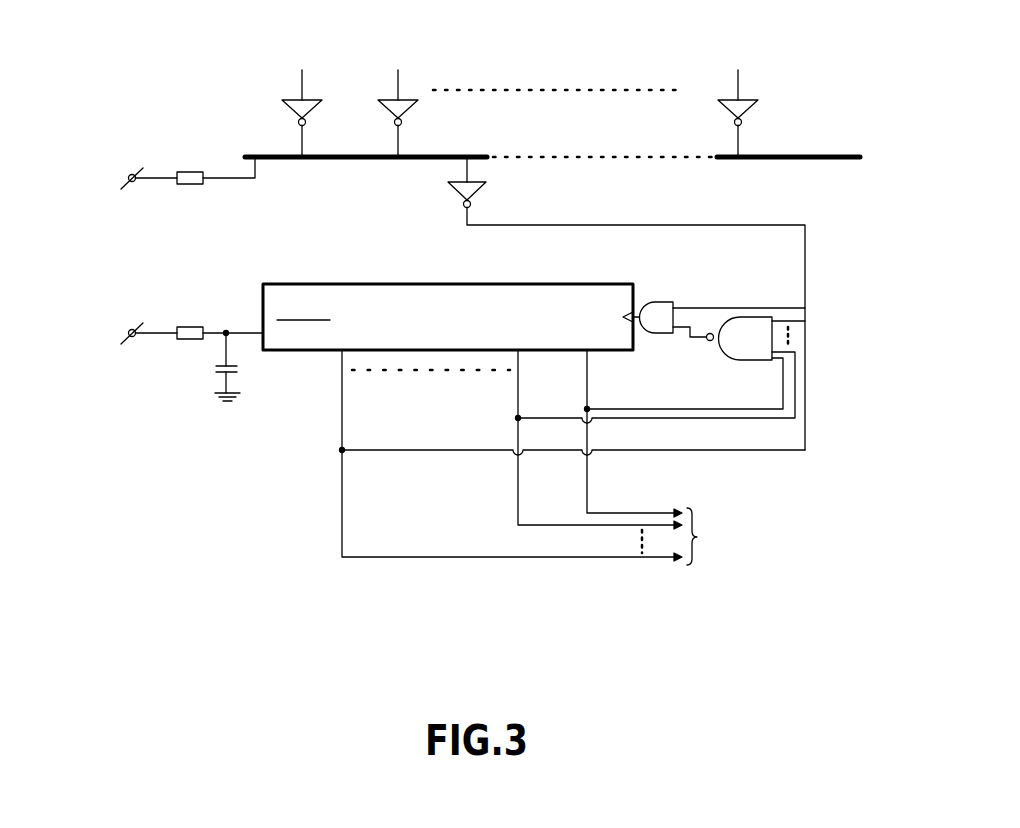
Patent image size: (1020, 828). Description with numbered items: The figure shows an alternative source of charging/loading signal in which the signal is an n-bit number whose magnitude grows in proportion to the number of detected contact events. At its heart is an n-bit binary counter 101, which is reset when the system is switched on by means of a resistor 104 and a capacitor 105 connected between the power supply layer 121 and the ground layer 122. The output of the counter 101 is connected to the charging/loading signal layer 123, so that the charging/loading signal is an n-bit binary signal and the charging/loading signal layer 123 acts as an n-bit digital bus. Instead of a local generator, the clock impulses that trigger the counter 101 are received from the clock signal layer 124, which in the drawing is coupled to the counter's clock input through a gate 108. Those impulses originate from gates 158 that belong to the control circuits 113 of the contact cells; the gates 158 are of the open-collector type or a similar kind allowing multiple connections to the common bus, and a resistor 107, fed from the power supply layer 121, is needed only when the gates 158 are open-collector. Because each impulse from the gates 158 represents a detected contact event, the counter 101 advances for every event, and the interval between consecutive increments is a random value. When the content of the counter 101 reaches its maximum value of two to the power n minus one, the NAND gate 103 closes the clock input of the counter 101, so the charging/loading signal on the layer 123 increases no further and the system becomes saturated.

The n-bit binary counter 101 is at (342, 282).
The NAND gate 103 is at (756, 338).
The resistor 104 is at (196, 328).
The capacitor 105 is at (247, 388).
The resistor 107 is at (156, 166).
The inverter 108 is at (461, 189).
The control circuit 113 is at (520, 56).
The power supply layer 121 is at (114, 194).
The ground layer 122 is at (277, 388).
The charging/loading signal layer 123 is at (568, 458).
The clock signal layer 124 is at (855, 155).
The gates 158 is at (541, 83).